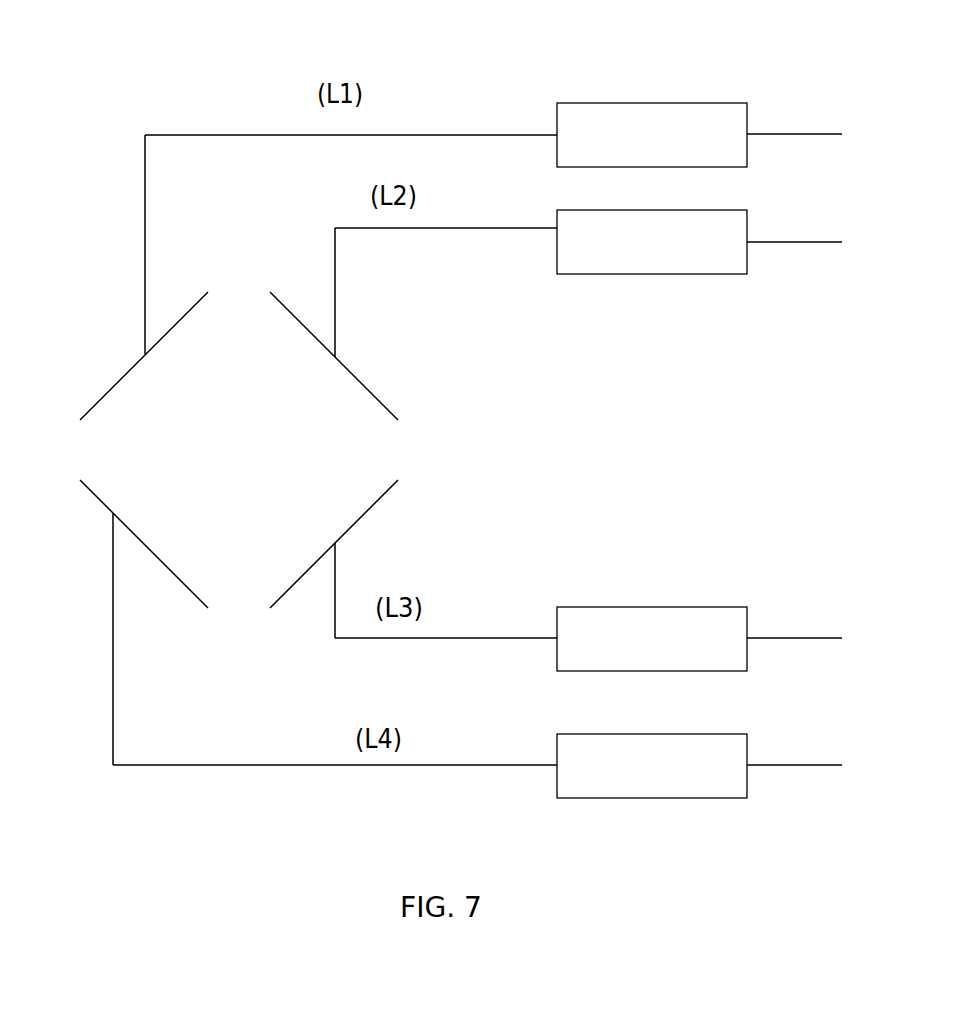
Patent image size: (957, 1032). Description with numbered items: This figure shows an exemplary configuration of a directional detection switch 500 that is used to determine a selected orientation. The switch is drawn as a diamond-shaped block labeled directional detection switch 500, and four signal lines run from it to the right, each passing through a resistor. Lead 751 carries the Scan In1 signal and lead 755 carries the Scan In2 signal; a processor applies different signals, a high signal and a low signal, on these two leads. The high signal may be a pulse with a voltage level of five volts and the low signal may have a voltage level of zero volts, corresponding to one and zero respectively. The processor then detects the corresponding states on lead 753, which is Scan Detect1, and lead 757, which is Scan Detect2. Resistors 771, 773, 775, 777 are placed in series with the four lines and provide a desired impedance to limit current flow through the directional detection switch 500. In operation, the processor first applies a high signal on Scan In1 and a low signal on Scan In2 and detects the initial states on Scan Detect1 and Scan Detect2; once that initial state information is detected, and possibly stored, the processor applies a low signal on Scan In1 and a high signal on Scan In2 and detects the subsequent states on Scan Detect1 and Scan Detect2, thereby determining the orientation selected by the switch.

The directional detection switch 500 is at (395, 405).
The resistor 771 is at (662, 103).
The resistor 773 is at (583, 274).
The resistor 775 is at (573, 607).
The resistor 777 is at (583, 798).
The lead (Scan In1) 751 is at (770, 136).
The lead (Scan Detect1) 753 is at (773, 243).
The lead (Scan In2) 755 is at (780, 643).
The lead (Scan Detect2) 757 is at (763, 767).